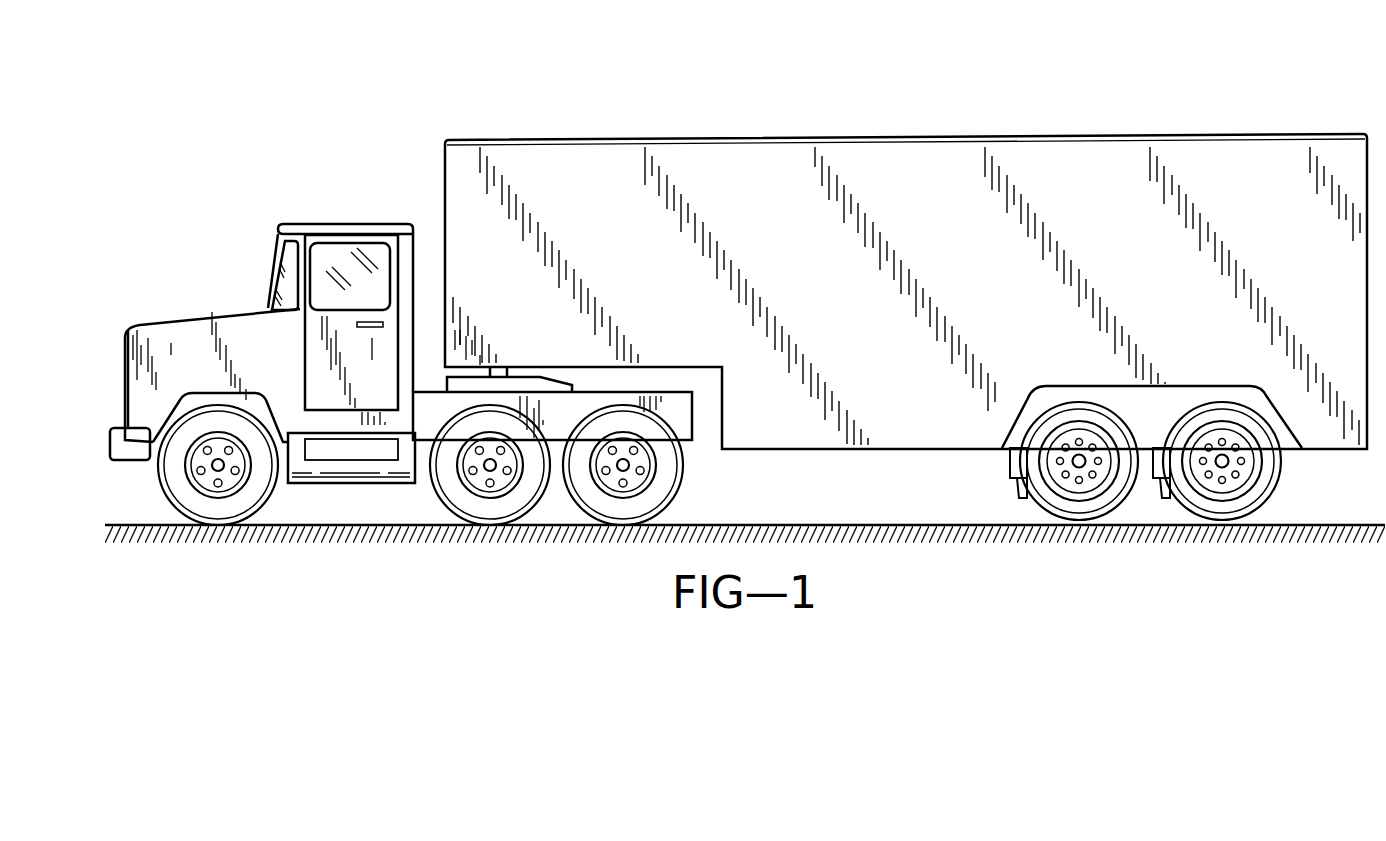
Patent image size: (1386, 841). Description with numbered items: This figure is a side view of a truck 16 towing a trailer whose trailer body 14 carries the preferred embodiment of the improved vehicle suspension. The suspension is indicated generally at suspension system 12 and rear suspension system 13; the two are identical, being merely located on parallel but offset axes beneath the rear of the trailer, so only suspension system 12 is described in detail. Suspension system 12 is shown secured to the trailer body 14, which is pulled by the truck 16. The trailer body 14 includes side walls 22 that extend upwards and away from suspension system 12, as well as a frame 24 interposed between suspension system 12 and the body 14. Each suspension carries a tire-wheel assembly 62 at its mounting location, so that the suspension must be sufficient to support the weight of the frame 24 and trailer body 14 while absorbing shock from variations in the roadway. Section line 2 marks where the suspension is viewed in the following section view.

The trailer body 14 is at (570, 135).
The truck 16 is at (316, 220).
The tire-wheel assembly 62 is at (1053, 413).
The side walls 22 is at (1173, 402).
The frame 24 is at (1010, 462).
The suspension system 12 is at (998, 493).
The rear suspension system 13 is at (1155, 498).
The section line 2 is at (949, 567).